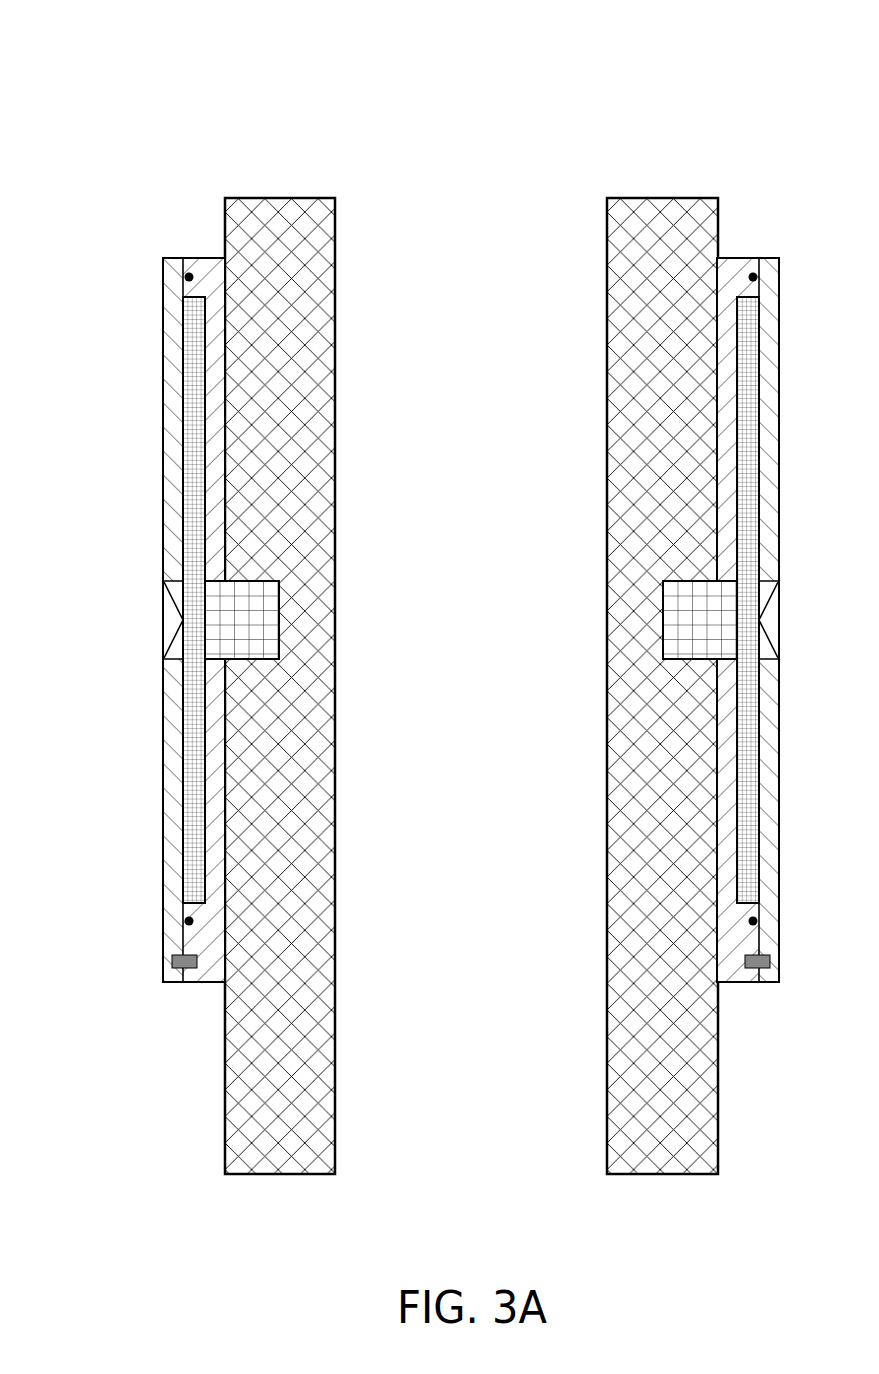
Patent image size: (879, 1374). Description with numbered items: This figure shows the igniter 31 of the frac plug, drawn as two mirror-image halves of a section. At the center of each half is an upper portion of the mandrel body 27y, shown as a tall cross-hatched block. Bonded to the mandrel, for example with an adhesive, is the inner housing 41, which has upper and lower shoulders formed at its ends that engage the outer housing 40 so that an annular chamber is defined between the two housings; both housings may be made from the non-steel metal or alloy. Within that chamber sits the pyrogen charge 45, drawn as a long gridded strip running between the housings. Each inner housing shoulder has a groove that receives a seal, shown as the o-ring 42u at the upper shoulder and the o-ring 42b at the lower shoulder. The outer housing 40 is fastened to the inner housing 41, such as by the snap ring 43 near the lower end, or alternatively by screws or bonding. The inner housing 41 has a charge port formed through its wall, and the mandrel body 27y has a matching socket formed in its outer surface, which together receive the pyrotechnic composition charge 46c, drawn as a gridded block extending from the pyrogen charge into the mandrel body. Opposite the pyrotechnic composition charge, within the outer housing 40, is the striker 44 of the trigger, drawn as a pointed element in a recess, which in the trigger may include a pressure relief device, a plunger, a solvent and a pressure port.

The igniter 31 is at (65, 53).
The mandrel body 27y is at (247, 1175).
The outer housing 40 is at (163, 388).
The inner housing 41 is at (207, 257).
The o-ring 42u is at (189, 273).
The o-ring 42b is at (185, 921).
The snap ring 43 is at (180, 963).
The striker 44 is at (163, 614).
The pyrogen charge 45 is at (193, 457).
The pyrotechnic composition charge 46c is at (242, 620).